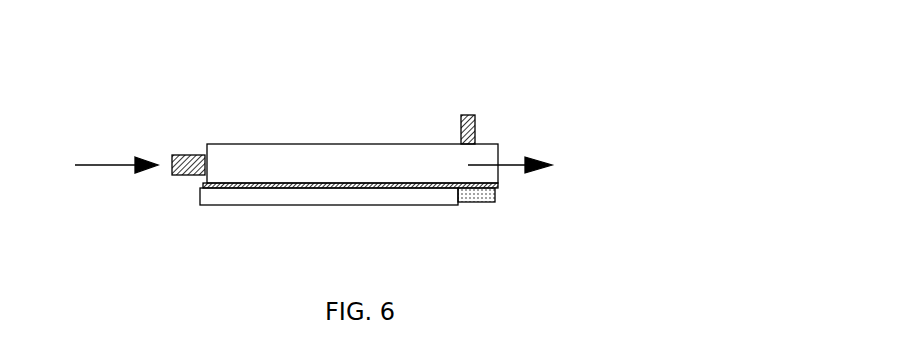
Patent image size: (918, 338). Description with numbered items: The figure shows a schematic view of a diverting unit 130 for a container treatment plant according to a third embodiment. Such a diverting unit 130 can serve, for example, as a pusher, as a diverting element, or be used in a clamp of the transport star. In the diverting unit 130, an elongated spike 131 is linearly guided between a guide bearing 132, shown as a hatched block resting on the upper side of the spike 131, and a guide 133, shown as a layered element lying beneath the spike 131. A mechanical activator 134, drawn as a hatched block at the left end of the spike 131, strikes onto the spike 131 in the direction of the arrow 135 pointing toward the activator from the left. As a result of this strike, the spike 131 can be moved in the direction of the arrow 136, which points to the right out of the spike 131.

The diverting unit 130 is at (502, 67).
The spike 131 is at (347, 144).
The guide bearing 132 is at (475, 130).
The guide 133 is at (262, 206).
The mechanical activator 134 is at (190, 155).
The arrow 135 is at (95, 163).
The arrow 136 is at (534, 166).